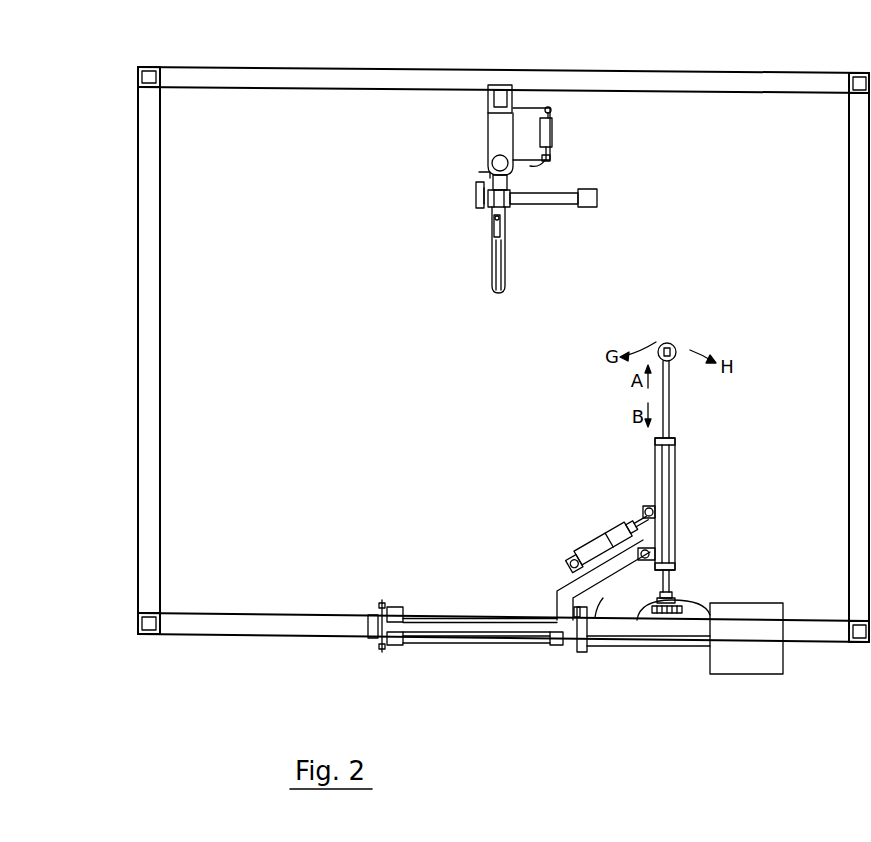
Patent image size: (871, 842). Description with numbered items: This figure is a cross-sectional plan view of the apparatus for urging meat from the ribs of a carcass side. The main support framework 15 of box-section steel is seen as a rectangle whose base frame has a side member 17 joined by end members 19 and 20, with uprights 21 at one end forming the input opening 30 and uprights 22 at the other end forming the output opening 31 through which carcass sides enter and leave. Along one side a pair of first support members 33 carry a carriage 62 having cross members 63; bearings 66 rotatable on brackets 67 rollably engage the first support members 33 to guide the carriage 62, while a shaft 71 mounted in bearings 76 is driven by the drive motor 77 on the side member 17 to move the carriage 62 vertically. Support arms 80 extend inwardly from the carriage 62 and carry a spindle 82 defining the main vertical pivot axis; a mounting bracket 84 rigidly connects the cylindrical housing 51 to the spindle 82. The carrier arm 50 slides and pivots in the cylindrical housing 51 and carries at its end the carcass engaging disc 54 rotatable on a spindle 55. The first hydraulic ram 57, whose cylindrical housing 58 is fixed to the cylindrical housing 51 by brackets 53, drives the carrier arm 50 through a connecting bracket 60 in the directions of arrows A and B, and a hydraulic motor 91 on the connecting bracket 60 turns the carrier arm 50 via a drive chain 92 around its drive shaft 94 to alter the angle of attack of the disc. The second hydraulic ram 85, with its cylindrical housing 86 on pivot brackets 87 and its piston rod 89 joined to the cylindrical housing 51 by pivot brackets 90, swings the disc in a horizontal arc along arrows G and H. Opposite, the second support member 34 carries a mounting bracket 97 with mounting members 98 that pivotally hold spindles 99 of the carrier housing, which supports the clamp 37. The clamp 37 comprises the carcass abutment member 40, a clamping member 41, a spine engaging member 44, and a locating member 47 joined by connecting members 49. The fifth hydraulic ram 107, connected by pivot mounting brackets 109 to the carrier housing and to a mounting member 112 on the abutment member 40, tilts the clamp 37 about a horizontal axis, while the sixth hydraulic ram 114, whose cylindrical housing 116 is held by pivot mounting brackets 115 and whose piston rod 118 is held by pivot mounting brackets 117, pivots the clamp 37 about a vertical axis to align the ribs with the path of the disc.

The main support framework 15 is at (226, 78).
The side member 17 is at (332, 80).
The end member 19 is at (850, 219).
The end member 20 is at (158, 362).
The uprights 21 is at (863, 76).
The uprights 22 is at (157, 66).
The input opening 30 is at (856, 125).
The output opening 31 is at (158, 239).
The first support members 33 is at (369, 620).
The second support member 34 is at (500, 85).
The clamp 37 is at (506, 218).
The carcass abutment member 40 is at (484, 208).
The clamping member 41 is at (499, 280).
The spine engaging member 44 is at (505, 232).
The locating member 47 is at (590, 201).
The connecting members 49 is at (551, 200).
The carrier arm 50 is at (670, 386).
The cylindrical housing 51 is at (668, 462).
The brackets 53 is at (675, 443).
The carcass engaging disc 54 is at (671, 344).
The spindle 55 is at (677, 349).
The first hydraulic ram 57 is at (677, 487).
The cylindrical housing 58 is at (676, 508).
The connecting bracket 60 is at (645, 597).
The carriage 62 is at (480, 625).
The cross members 63 is at (455, 628).
The bearings 66 is at (381, 605).
The brackets 67 is at (396, 607).
The shaft 71 is at (698, 645).
The bearings 76 is at (371, 640).
The drive motor 77 is at (758, 675).
The support arms 80 is at (556, 590).
The spindle 82 is at (655, 556).
The mounting bracket 84 is at (623, 531).
The second hydraulic ram 85 is at (594, 545).
The cylindrical housing 86 is at (570, 557).
The pivot brackets 87 is at (571, 560).
The piston rod 89 is at (607, 528).
The pivot brackets 90 is at (651, 508).
The hydraulic motor 91 is at (678, 593).
The drive chain 92 is at (668, 613).
The drive shaft 94 is at (690, 605).
The mounting bracket 97 is at (487, 100).
The mounting members 98 is at (490, 140).
The spindles 99 is at (494, 163).
The fifth hydraulic ram 107 is at (472, 172).
The pivot mounting brackets 109 is at (477, 183).
The mounting member 112 is at (480, 200).
The sixth hydraulic ram 114 is at (556, 128).
The pivot mounting brackets 115 is at (547, 106).
The cylindrical housing 116 is at (553, 135).
The pivot mounting brackets 117 is at (535, 173).
The piston rod 118 is at (552, 149).